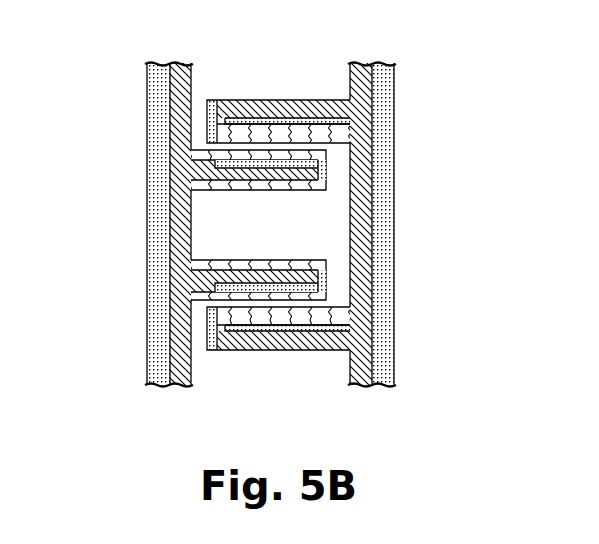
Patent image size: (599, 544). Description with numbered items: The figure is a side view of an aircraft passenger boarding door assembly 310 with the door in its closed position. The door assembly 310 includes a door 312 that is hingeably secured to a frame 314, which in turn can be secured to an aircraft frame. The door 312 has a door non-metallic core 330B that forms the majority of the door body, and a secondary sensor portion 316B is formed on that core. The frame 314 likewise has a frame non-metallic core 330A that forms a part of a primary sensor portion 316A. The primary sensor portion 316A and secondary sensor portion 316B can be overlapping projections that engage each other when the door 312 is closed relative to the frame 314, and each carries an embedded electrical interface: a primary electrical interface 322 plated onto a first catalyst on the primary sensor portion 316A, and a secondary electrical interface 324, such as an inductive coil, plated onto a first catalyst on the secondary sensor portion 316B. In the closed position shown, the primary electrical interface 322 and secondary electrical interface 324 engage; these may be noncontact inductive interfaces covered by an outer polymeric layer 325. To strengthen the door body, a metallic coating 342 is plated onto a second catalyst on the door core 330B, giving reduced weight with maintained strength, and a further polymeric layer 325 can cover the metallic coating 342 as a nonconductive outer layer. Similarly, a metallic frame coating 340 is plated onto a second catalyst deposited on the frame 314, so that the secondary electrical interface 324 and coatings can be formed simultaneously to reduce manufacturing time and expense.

The door assembly 310 is at (486, 76).
The door 312 is at (163, 424).
The frame 314 is at (383, 424).
The primary sensor portion 316A is at (284, 82).
The secondary sensor portion 316B is at (216, 252).
The primary electrical interface 322 is at (352, 123).
The secondary electrical interface 324 is at (268, 290).
The outer polymeric layer 325 is at (322, 262).
The frame non-metallic core 330A is at (362, 364).
The door non-metallic core 330B is at (182, 355).
The metallic frame coating 340 is at (382, 290).
The metallic coating 342 is at (158, 281).